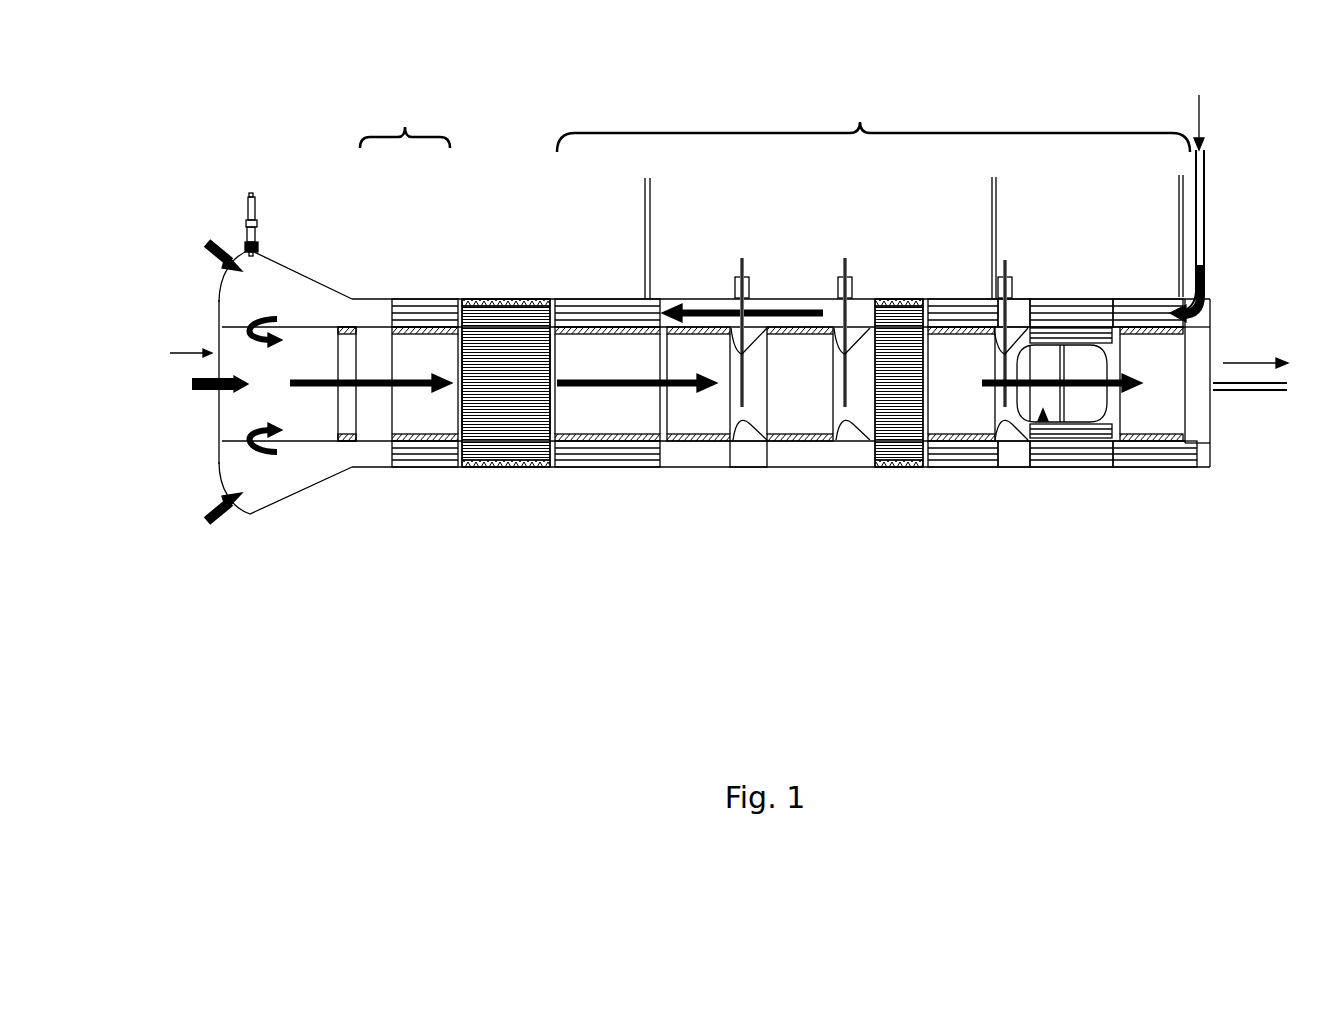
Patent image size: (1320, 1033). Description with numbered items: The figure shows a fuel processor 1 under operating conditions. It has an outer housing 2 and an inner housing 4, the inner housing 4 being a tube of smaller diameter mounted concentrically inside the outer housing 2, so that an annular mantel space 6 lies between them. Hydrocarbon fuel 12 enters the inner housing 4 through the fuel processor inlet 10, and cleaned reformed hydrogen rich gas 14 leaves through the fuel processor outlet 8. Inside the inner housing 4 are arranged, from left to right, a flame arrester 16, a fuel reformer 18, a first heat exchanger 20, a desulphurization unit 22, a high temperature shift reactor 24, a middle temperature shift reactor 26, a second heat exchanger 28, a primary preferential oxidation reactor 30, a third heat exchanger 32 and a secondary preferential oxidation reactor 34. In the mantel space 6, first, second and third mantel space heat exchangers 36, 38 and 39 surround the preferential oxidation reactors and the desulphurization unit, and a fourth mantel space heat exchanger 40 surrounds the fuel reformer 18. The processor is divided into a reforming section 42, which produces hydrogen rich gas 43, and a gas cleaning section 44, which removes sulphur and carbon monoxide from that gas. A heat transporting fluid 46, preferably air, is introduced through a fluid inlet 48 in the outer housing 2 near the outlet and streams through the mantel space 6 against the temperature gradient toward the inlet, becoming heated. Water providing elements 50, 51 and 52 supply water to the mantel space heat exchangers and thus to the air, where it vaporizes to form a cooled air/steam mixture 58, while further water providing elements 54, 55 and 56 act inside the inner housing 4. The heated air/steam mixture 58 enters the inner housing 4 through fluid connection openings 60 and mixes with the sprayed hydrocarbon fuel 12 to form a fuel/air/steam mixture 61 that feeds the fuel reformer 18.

The fuel processor 1 is at (736, 100).
The outer housing 2 is at (298, 262).
The inner housing 4 is at (379, 324).
The mantel space 6 is at (1020, 308).
The fuel processor outlet 8 is at (1238, 393).
The fuel processor inlet 10 is at (205, 392).
The hydrocarbon fuel 12 is at (191, 340).
The cleaned reformed hydrogen rich gas 14 is at (1255, 348).
The flame arrester 16 is at (347, 410).
The fuel reformer 18 is at (426, 405).
The first heat exchanger 20 is at (495, 368).
The desulphurization unit 22 is at (583, 405).
The high temperature shift reactor 24 is at (695, 407).
The middle temperature shift reactor 26 is at (792, 407).
The second heat exchanger 28 is at (899, 438).
The primary preferential oxidation reactor 30 is at (958, 390).
The third heat exchanger 32 is at (1043, 422).
The secondary preferential oxidation reactor 34 is at (1153, 407).
The first mantel space heat exchanger 36 is at (1130, 440).
The second mantel space heat exchanger 38 is at (970, 440).
The third mantel space heat exchanger 39 is at (616, 441).
The fourth mantel space heat exchanger 40 is at (460, 468).
The reforming section 42 is at (405, 119).
The hydrogen rich gas 43 is at (637, 368).
The gas cleaning section 44 is at (873, 115).
The heat transporting fluid 46 is at (1221, 122).
The fluid inlet 48 is at (1205, 257).
The water providing element 50 is at (1178, 210).
The water providing element 51 is at (990, 213).
The water providing element 52 is at (645, 242).
The water providing element 54 is at (747, 263).
The water providing element 55 is at (849, 263).
The water providing element 56 is at (1007, 267).
The air/steam mixture 58 is at (742, 298).
The fluid connection openings 60 is at (240, 443).
The fuel/air/steam mixture 61 is at (371, 368).